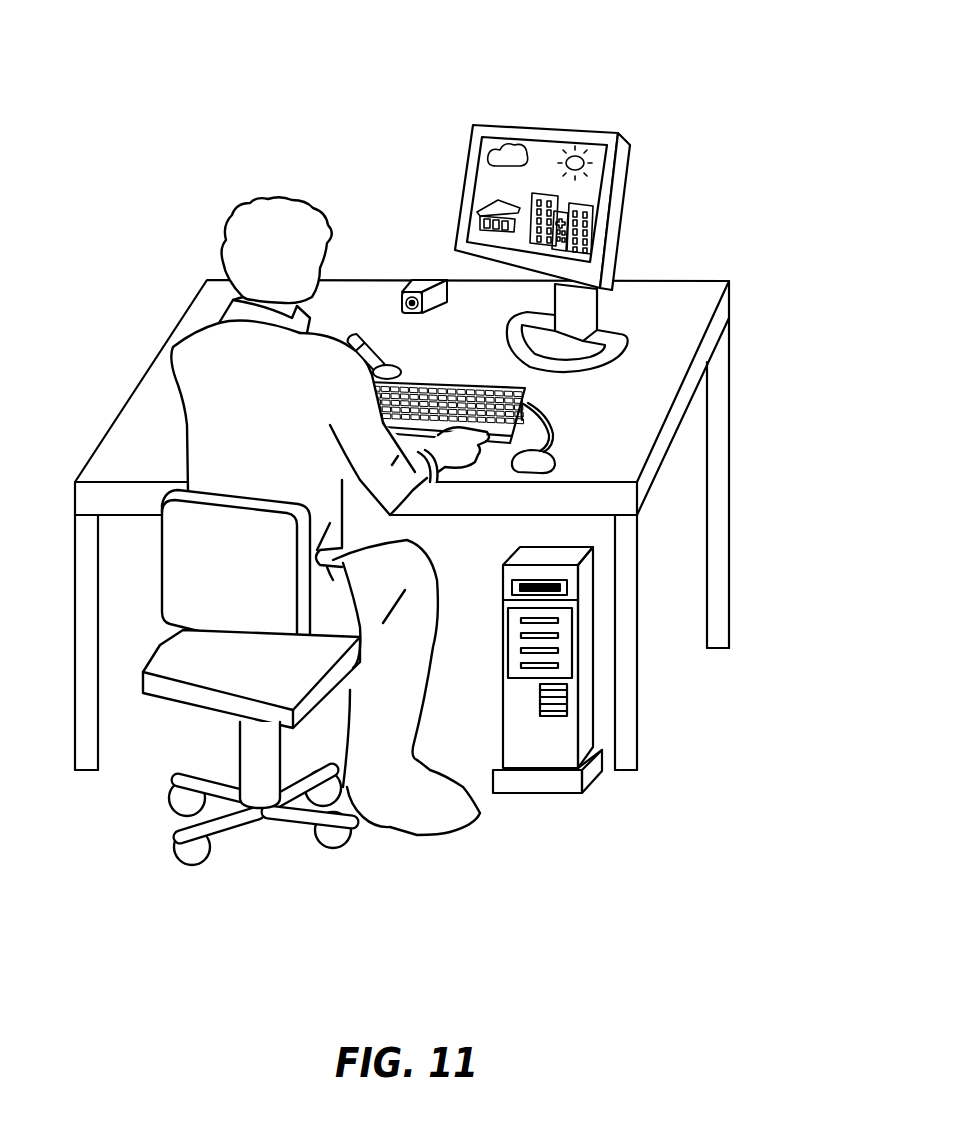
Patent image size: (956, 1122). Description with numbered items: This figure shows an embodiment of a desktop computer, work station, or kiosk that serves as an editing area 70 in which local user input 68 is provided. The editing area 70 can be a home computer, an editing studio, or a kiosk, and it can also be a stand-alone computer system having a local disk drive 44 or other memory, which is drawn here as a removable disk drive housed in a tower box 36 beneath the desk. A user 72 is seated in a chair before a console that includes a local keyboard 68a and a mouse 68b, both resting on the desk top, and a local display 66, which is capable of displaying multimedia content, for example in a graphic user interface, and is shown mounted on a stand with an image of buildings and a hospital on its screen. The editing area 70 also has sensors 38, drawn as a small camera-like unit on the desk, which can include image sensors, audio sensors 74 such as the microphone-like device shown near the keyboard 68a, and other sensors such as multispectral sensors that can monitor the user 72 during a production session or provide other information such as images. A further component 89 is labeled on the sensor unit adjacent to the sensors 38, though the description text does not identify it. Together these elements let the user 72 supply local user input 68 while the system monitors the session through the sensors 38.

The editing area 70 is at (704, 67).
The local user input 68 is at (676, 247).
The local display 66 is at (517, 134).
The user 72 is at (203, 327).
The audio sensor 74 is at (358, 340).
The camera lens 89 is at (401, 292).
The sensors 38 is at (431, 275).
The local keyboard 68a is at (478, 383).
The mouse 68b is at (548, 452).
The local disk drive 44 is at (480, 608).
The tower box 36 is at (537, 793).